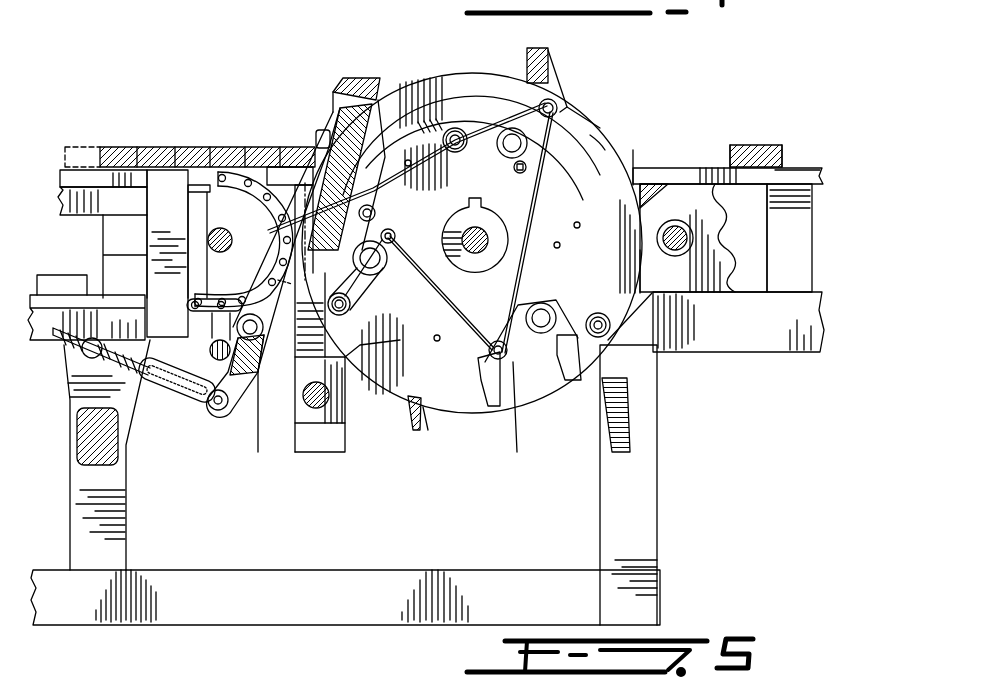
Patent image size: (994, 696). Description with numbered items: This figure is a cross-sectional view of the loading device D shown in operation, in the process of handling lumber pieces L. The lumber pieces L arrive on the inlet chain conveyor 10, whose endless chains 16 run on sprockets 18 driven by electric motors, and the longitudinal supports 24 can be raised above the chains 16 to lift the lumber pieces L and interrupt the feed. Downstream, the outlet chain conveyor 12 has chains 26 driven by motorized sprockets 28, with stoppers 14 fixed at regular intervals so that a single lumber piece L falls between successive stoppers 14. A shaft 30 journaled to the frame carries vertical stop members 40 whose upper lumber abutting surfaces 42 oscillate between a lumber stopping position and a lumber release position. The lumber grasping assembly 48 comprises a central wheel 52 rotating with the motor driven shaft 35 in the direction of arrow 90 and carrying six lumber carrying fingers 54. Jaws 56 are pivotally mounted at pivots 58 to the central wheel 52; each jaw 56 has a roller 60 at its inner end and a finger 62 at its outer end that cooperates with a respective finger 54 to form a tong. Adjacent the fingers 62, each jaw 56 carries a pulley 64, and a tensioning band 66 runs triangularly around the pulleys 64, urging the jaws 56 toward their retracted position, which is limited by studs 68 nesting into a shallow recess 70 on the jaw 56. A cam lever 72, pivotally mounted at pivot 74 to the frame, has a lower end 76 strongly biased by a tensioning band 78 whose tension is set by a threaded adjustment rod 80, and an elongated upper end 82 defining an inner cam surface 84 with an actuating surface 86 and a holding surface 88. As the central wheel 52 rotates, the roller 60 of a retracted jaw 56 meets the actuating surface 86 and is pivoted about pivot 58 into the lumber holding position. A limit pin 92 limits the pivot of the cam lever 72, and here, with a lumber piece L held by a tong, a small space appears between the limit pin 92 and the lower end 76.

The inlet chain conveyor 10 is at (52, 152).
The lumber pieces L is at (152, 140).
The loading device D is at (385, 52).
The outlet chain conveyor 12 is at (824, 198).
The stoppers 14 is at (738, 148).
The endless chains 16 is at (230, 172).
The sprockets 18 is at (210, 205).
The longitudinal supports 24 is at (298, 197).
The chains 26 is at (800, 168).
The motorized sprockets 28 is at (708, 267).
The shaft 30 is at (318, 423).
The motor driven shaft 35 is at (482, 254).
The vertical stop members 40 is at (300, 432).
The lumber abutting surfaces 42 is at (316, 128).
The lumber grasping assembly 48 is at (478, 428).
The central wheel 52 is at (600, 128).
The lumber carrying fingers 54 is at (523, 63).
The jaws 56 is at (600, 95).
The pivot 58 is at (520, 146).
The roller 60 is at (452, 132).
The finger 62 is at (533, 80).
The pulley 64 is at (575, 92).
The tensioning band 66 is at (533, 255).
The studs 68 is at (526, 171).
The shallow recess 70 is at (600, 145).
The cam lever 72 is at (318, 196).
The pivot 74 is at (250, 392).
The lower end 76 is at (238, 392).
The tensioning band 78 is at (175, 405).
The threaded adjustment rod 80 is at (133, 376).
The elongated upper end 82 is at (415, 135).
The inner cam surface 84 is at (390, 172).
The actuating surface 86 is at (352, 302).
The holding surface 88 is at (432, 162).
The arrow 90 is at (364, 406).
The limit pin 92 is at (210, 345).